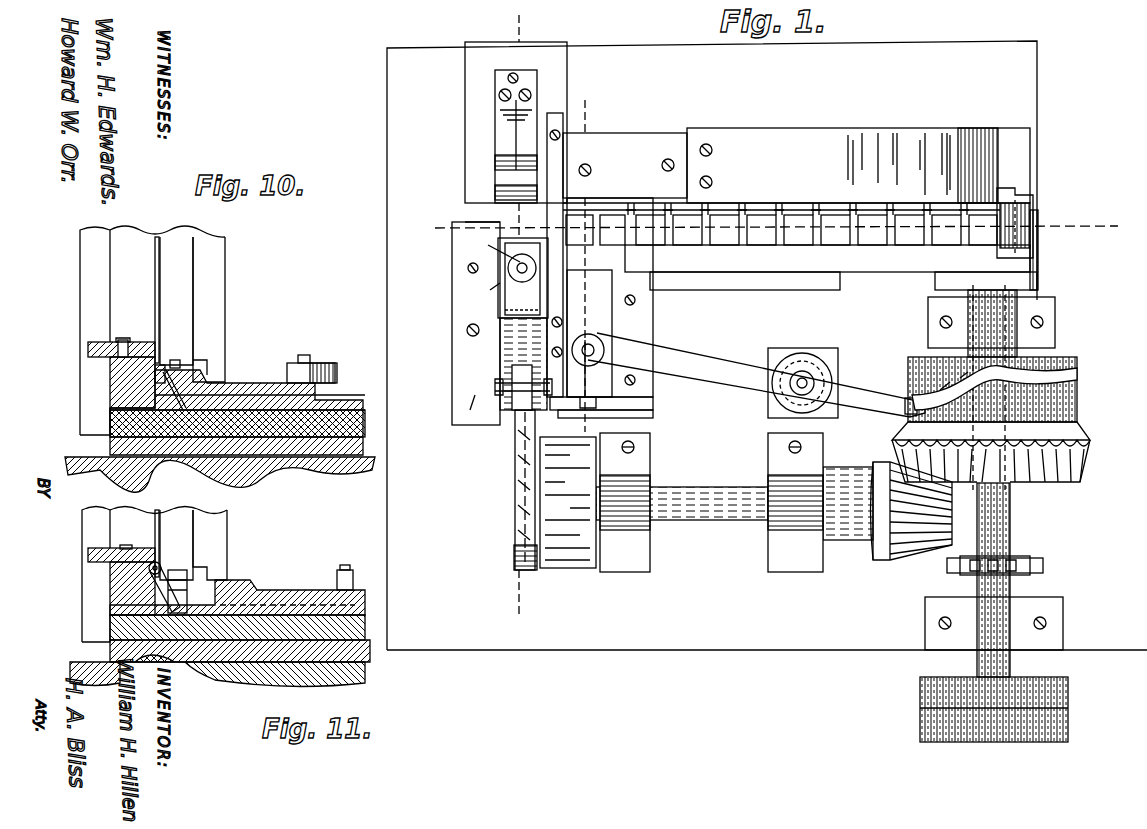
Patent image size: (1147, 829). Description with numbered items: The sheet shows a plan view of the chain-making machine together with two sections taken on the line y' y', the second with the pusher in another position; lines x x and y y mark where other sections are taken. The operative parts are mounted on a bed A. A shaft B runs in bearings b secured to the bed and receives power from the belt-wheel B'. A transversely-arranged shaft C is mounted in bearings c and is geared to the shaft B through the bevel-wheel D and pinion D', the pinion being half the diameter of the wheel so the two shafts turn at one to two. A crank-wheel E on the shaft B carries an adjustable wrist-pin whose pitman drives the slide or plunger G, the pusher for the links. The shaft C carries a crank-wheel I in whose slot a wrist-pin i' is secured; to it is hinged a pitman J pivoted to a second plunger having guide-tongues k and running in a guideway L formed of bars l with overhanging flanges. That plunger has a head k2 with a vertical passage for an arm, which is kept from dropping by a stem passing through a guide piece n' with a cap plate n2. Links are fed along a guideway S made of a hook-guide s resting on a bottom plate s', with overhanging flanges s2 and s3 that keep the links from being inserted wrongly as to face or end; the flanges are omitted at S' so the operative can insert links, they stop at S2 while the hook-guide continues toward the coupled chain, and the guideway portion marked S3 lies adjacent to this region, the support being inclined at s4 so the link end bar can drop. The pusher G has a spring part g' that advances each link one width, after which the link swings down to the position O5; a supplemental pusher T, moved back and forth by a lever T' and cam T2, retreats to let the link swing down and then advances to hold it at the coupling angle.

In FIG. 1, the bed A is at (767, 345).
In FIG. 11, the bed A is at (215, 703).
In FIG. 1, the section line y y is at (516, 320).
In FIG. 1, the section line y' y' is at (583, 262).
In FIG. 1, the section line x x is at (764, 226).
In FIG. 1, the standard / upright post P is at (516, 132).
In FIG. 1, the guideway L is at (462, 323).
In FIG. 1, the bar l is at (469, 406).
In FIG. 1, the guide piece n' is at (523, 278).
In FIG. 1, the cap plate n2 is at (492, 249).
In FIG. 1, the head k2 is at (481, 290).
In FIG. 1, the guide-tongue k is at (523, 364).
In FIG. 1, the pitman J is at (515, 508).
In FIG. 1, the wrist-pin i' is at (525, 576).
In FIG. 1, the supplemental pusher T is at (756, 363).
In FIG. 10, the supplemental pusher T is at (220, 422).
In FIG. 11, the supplemental pusher T is at (237, 586).
In FIG. 1, the lever T' is at (773, 375).
In FIG. 10, the lever T' is at (322, 357).
In FIG. 11, the lever T' is at (358, 561).
In FIG. 1, the cam T2 is at (905, 355).
In FIG. 1, the guideway S is at (781, 169).
In FIG. 10, the guideway S is at (152, 322).
In FIG. 11, the guideway S is at (154, 561).
In FIG. 1, the link-insertion point S' is at (812, 210).
In FIG. 1, the flange stop line S2 is at (985, 195).
In FIG. 1, the lower bar S3 is at (985, 247).
In FIG. 1, the crank-wheel E is at (1040, 275).
In FIG. 1, the bearing b is at (1005, 330).
In FIG. 1, the shaft B is at (995, 481).
In FIG. 1, the belt-wheel B' is at (1010, 709).
In FIG. 1, the bevel-wheel D is at (1006, 452).
In FIG. 1, the pinion D' is at (907, 532).
In FIG. 1, the transversely-arranged shaft C is at (715, 520).
In FIG. 1, the bearing c is at (640, 500).
In FIG. 1, the crank-wheel I is at (560, 570).
In FIG. 10, the hook-guide s is at (120, 373).
In FIG. 11, the hook-guide s is at (120, 580).
In FIG. 10, the flange s2 is at (155, 263).
In FIG. 11, the flange s2 is at (155, 523).
In FIG. 10, the bottom plate s' is at (207, 301).
In FIG. 11, the bottom plate s' is at (209, 541).
In FIG. 10, the flange s3 is at (200, 303).
In FIG. 11, the flange s3 is at (205, 535).
In FIG. 10, the inclined support s4 is at (118, 400).
In FIG. 11, the inclined support s4 is at (118, 610).
In FIG. 10, the movable pusher part g' is at (170, 370).
In FIG. 11, the movable pusher part g' is at (170, 572).
In FIG. 10, the slide or plunger G is at (110, 393).
In FIG. 11, the slide or plunger G is at (110, 600).
In FIG. 11, the link position O5 is at (190, 600).